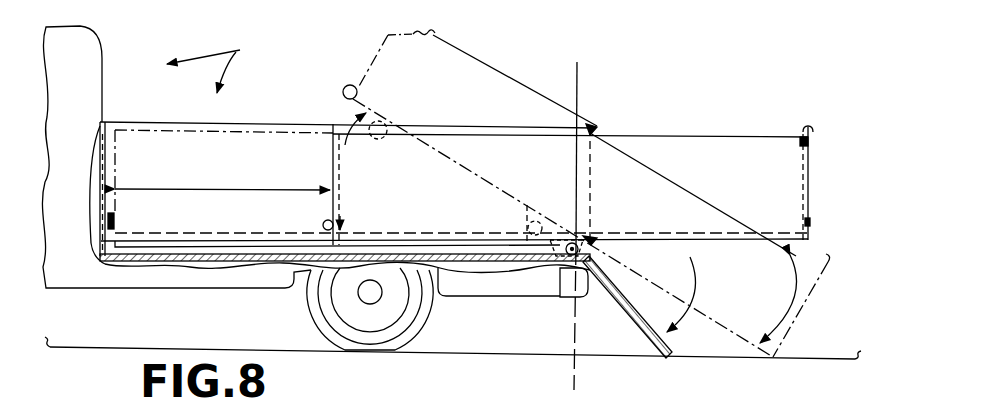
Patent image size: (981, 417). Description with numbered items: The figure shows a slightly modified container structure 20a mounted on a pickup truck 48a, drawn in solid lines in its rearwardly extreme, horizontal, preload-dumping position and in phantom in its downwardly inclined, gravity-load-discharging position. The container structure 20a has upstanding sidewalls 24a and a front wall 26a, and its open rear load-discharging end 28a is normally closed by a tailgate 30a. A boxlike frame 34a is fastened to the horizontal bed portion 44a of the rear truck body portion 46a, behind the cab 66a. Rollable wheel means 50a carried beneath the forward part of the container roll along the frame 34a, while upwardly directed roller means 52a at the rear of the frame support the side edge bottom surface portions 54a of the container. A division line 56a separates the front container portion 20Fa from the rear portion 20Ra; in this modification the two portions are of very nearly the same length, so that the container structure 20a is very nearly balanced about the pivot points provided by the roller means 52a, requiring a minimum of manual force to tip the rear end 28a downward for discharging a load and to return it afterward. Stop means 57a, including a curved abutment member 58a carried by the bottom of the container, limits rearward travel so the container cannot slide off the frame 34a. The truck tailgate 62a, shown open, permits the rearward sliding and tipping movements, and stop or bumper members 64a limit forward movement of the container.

The container structure 20a is at (652, 106).
The front container portion 20Fa is at (492, 124).
The rear portion of container structure 20Ra is at (700, 136).
The sidewall 24a is at (461, 191).
The front wall 26a is at (343, 152).
The open rear load-discharging end 28a is at (805, 214).
The tailgate 30a is at (808, 224).
The frame means 34a is at (224, 246).
The horizontal bed portion 44a is at (283, 262).
The rear truck body portion 46a is at (163, 292).
The pickup truck 48a is at (220, 66).
The rollable wheel means 50a is at (378, 242).
The upwardly directed roller means 52a is at (598, 248).
The side edge bottom surface portions 54a is at (478, 240).
The division line 56a is at (579, 97).
The stop means 57a is at (542, 262).
The curved abutment member 58a is at (578, 212).
The truck tailgate 62a is at (645, 315).
The stop or bumper member 64a is at (318, 215).
The cab 66a is at (103, 92).